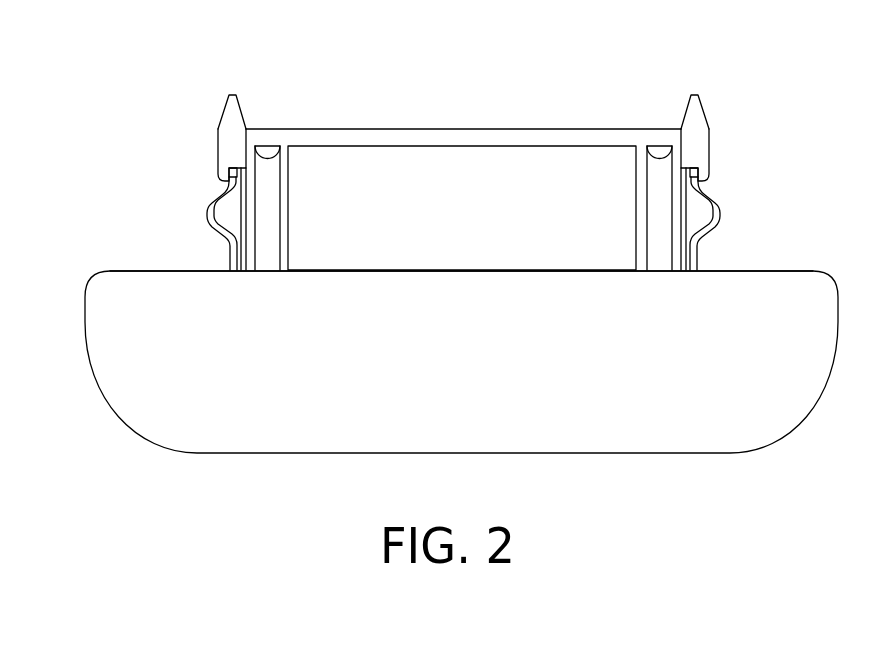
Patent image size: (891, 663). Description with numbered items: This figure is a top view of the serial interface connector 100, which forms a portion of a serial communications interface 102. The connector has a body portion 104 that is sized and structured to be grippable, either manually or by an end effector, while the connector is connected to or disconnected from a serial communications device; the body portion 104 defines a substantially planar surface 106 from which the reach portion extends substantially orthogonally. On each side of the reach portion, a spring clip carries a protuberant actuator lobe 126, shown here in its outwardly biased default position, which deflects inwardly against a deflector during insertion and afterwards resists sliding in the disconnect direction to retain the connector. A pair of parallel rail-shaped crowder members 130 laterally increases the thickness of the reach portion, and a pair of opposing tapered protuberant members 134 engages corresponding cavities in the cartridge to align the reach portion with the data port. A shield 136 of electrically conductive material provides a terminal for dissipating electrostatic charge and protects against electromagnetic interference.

The serial interface connector 100 is at (212, 478).
The serial communications interface 102 is at (484, 74).
The body portion 104 is at (782, 360).
The planar surface 106 is at (770, 271).
The protuberant actuator lobe 126 is at (210, 205).
The crowder member 130 is at (270, 172).
The protuberant member 134 is at (229, 94).
The shield 136 is at (415, 173).